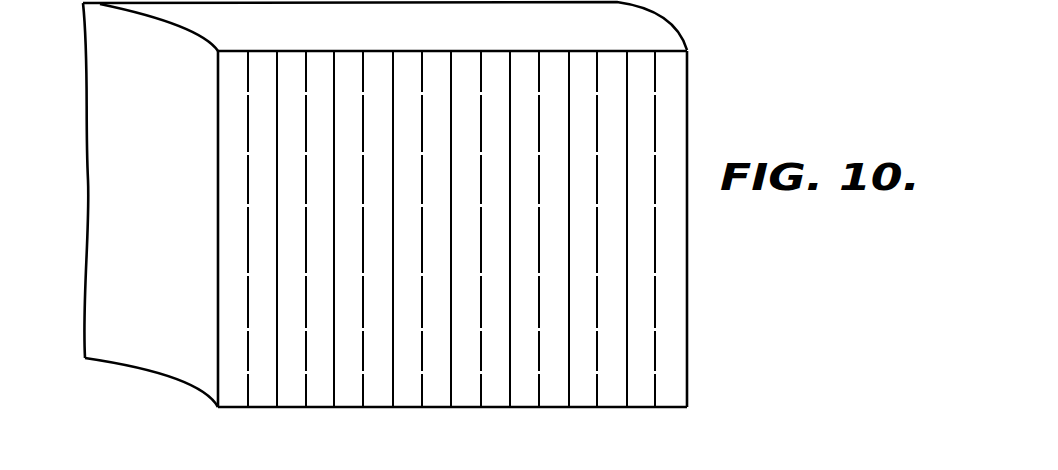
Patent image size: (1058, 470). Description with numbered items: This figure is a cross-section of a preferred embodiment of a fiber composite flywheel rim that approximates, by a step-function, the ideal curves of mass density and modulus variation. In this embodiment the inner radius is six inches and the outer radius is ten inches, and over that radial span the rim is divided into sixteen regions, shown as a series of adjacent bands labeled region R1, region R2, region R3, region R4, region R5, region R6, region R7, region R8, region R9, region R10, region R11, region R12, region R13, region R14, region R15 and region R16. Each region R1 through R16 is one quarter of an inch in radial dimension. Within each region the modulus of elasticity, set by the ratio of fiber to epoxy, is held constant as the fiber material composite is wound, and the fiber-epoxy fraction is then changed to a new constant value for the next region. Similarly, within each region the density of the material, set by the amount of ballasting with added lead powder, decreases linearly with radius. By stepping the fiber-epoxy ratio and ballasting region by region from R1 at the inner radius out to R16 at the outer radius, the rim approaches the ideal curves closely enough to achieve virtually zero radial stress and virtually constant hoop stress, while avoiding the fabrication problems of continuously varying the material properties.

The region R1 is at (234, 229).
The region R2 is at (264, 229).
The region R3 is at (293, 229).
The region R4 is at (321, 229).
The region R5 is at (350, 229).
The region R6 is at (379, 229).
The region R7 is at (409, 229).
The region R8 is at (438, 229).
The region R9 is at (467, 229).
The region R10 is at (497, 229).
The region R11 is at (526, 229).
The region R12 is at (555, 229).
The region R13 is at (584, 229).
The region R14 is at (613, 229).
The region R15 is at (642, 229).
The region R16 is at (672, 229).